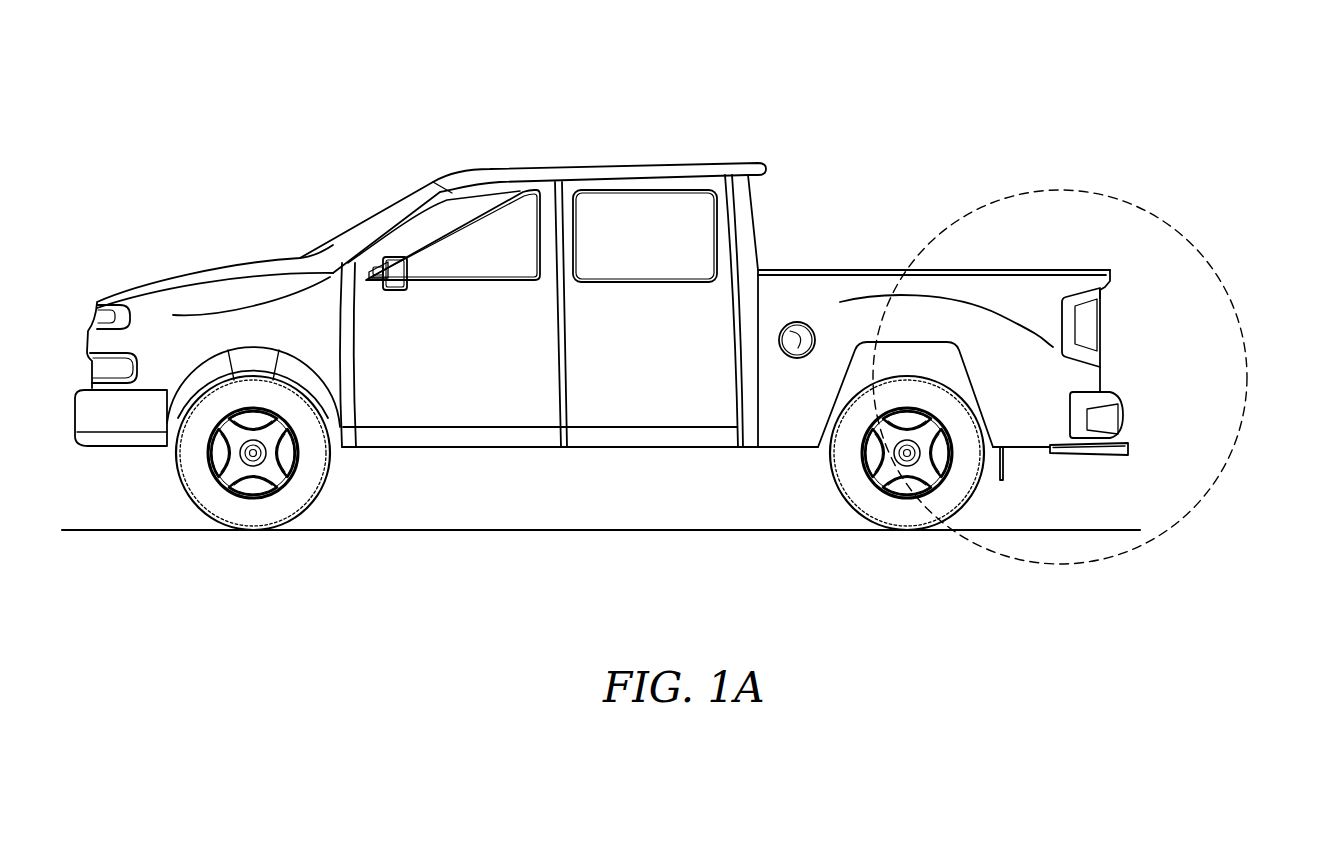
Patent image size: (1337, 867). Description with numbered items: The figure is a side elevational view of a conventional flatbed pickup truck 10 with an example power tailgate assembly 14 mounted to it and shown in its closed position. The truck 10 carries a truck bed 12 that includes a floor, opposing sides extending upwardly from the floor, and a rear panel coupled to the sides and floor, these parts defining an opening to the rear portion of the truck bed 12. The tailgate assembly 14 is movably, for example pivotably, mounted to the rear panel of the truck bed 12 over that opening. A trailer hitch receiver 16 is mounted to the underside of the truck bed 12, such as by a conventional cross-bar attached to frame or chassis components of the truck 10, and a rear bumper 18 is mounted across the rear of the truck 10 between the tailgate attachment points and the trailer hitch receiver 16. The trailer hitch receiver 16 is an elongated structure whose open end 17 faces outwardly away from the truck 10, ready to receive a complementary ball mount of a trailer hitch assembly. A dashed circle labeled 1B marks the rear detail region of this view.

The flatbed pickup truck 10 is at (773, 103).
The truck bed 12 is at (875, 247).
The power tailgate assembly 14 is at (1105, 318).
The trailer hitch receiver 16 is at (1110, 458).
The open end 17 is at (1128, 448).
The rear bumper 18 is at (1125, 418).
The detail view region 1B is at (1233, 305).